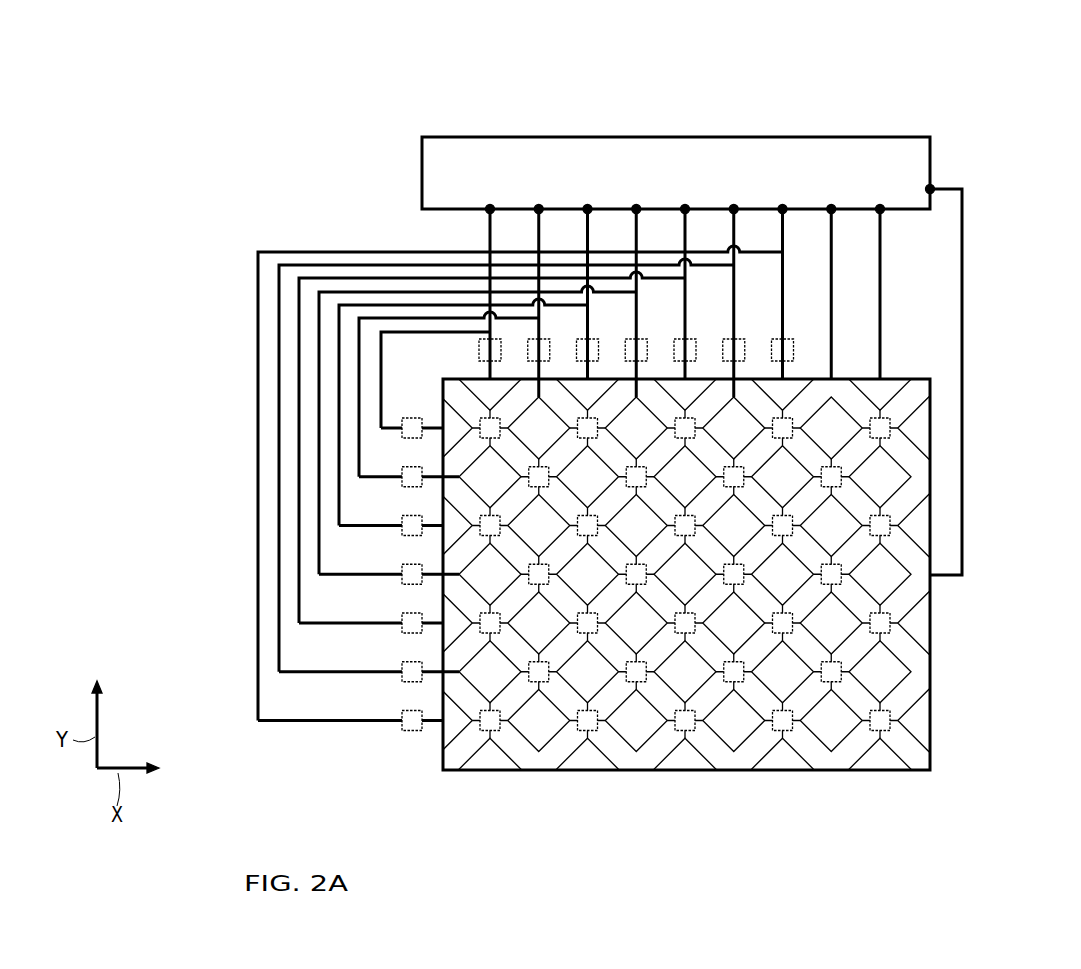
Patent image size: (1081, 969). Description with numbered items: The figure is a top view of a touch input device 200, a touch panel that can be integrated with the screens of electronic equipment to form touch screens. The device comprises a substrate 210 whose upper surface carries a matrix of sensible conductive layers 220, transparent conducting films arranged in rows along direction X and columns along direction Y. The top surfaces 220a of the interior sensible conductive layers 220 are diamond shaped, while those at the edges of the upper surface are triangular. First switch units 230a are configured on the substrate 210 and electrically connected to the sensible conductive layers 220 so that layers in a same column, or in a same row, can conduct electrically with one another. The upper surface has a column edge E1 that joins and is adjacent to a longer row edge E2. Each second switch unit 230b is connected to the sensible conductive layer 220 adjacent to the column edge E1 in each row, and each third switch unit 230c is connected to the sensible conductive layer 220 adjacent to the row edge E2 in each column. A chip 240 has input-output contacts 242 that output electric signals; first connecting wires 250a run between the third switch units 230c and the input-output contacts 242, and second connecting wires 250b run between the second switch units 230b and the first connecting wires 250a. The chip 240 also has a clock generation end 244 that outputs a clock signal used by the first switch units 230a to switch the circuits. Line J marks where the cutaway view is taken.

The touch input device 200 is at (1030, 872).
The substrate 210 is at (935, 388).
The sensible conductive layer 220 is at (483, 386).
The top surface 220a is at (443, 732).
The first switch unit 230a is at (893, 429).
The second switch unit 230b is at (401, 427).
The third switch unit 230c is at (482, 340).
The chip 240 is at (421, 150).
The input-output contact 242 is at (490, 204).
The clock generation end 244 is at (934, 186).
The first connecting wire 250a is at (489, 290).
The second connecting wire 250b is at (256, 253).
The column edge E1 is at (445, 497).
The row edge E2 is at (470, 392).
The line J- J is at (935, 520).